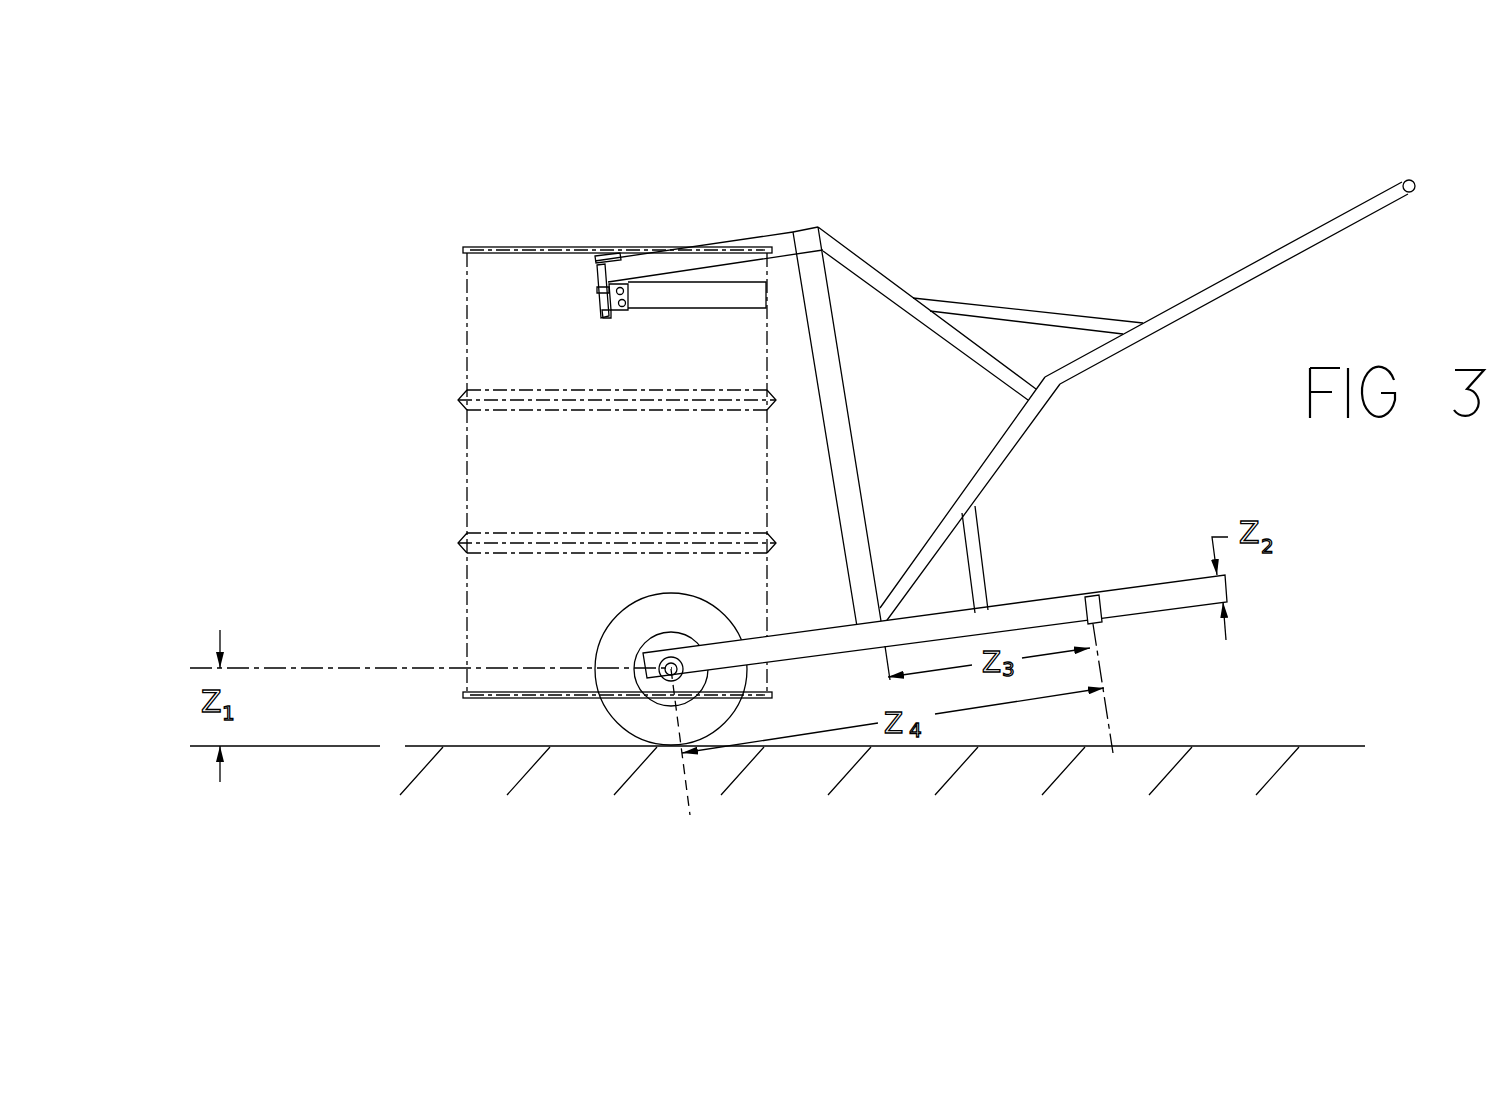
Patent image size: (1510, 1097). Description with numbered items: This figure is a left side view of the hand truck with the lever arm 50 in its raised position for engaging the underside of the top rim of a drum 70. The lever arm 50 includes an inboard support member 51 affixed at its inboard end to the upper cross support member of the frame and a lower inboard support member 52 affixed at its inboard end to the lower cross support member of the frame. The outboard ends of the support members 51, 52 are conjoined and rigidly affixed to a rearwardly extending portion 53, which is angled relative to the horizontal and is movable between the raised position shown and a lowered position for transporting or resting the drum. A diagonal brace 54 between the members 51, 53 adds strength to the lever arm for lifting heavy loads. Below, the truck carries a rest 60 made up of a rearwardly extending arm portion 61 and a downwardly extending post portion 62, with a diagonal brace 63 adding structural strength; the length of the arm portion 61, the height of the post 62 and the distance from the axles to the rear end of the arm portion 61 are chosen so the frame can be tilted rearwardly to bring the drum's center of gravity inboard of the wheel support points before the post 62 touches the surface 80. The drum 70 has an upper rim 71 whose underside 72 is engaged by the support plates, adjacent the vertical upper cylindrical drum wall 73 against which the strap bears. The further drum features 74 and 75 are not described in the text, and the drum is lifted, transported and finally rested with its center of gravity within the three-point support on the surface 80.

The lever arm 50 is at (965, 395).
The inboard support member 51 is at (868, 273).
The lower inboard support member 52 is at (1017, 435).
The rearwardly extending portion 53 is at (1283, 252).
The diagonal brace 54 is at (1057, 317).
The rest 60 is at (938, 601).
The rearwardly extending arm portion 61 is at (1025, 614).
The downwardly extending post portion 62 is at (1095, 625).
The diagonal brace 63 is at (972, 535).
The drum 70 is at (617, 385).
The upper rim 71 is at (465, 248).
The underside of the rim 72 is at (465, 253).
The upper cylindrical drum wall 73 is at (466, 372).
The bottom rim 74 is at (468, 697).
The drum sidewall 75 is at (468, 622).
The surface 80 is at (1243, 747).